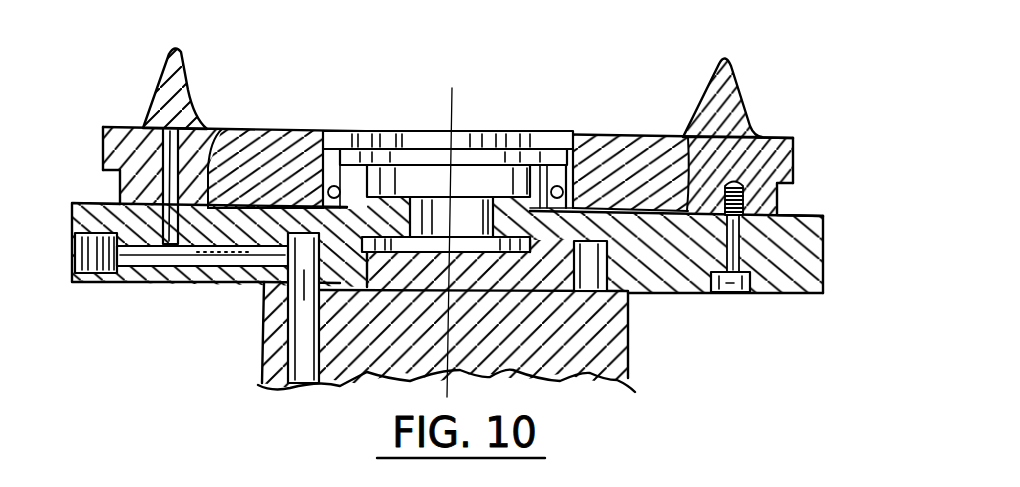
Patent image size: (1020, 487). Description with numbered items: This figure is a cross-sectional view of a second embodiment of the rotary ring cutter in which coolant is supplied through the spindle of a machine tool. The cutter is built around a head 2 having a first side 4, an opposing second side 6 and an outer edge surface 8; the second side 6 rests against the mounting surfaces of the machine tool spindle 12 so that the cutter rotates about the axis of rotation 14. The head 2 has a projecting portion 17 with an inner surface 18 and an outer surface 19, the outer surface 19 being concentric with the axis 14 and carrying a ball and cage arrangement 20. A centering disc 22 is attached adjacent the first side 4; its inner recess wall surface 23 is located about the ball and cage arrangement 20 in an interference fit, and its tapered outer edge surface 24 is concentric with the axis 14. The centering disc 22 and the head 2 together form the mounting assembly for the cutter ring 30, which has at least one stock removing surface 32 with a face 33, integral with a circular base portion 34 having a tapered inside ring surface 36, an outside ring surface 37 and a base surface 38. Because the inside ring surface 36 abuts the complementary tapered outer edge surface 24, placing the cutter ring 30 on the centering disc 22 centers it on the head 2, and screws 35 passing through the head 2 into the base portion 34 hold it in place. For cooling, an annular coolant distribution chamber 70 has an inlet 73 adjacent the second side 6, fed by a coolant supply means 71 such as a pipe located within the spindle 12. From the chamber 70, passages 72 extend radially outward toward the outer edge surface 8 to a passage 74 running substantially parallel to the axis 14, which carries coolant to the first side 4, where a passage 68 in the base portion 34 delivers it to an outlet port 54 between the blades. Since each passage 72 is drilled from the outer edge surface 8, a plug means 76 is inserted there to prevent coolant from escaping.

The head 2 is at (800, 243).
The first side 4 is at (800, 210).
The second side 6 is at (797, 297).
The outer edge surface 8 is at (823, 255).
The machine tool spindle 12 is at (613, 378).
The axis of rotation 14 is at (447, 118).
The projecting portion 17 is at (535, 133).
The inner surface 18 is at (505, 135).
The outer surface 19 is at (573, 135).
The ball and cage arrangement 20 is at (340, 183).
The centering disc 22 is at (288, 129).
The inner recess wall surface 23 is at (336, 131).
The tapered outer edge surface 24 is at (237, 128).
The cutter ring 30 is at (766, 128).
The stock removing surface 32 is at (730, 70).
The face 33 is at (182, 70).
The circular base portion 34 is at (715, 153).
The screw 35 is at (740, 297).
The tapered inside ring surface 36 is at (683, 133).
The outside ring surface 37 is at (797, 148).
The base surface 38 is at (133, 188).
The outlet port 54 is at (163, 130).
The passage 68 is at (160, 160).
The annular coolant distribution chamber 70 is at (612, 254).
The coolant supply means 71 is at (263, 362).
The passage 72 is at (180, 285).
The inlet 73 is at (288, 305).
The passage 74 is at (75, 218).
The plug means 76 is at (72, 245).